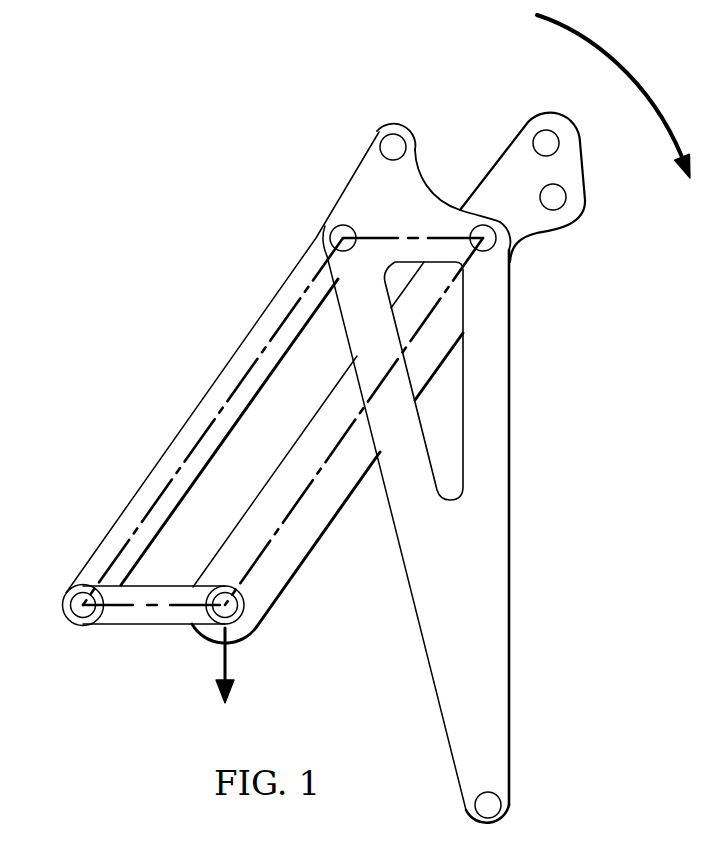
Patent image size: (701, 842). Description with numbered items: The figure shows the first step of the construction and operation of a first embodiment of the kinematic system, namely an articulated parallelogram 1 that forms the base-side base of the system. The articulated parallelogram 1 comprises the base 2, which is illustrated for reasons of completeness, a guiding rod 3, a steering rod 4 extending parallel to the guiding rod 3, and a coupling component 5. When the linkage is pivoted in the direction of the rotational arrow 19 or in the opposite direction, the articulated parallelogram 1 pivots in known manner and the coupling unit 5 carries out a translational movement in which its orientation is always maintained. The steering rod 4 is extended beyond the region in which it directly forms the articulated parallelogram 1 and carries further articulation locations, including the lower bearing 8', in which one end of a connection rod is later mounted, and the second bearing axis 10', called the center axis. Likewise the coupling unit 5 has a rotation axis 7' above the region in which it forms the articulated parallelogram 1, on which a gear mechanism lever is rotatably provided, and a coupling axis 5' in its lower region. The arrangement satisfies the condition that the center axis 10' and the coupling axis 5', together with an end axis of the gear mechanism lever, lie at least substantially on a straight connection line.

The articulated parallelogram 1 is at (259, 437).
The base 2 is at (147, 627).
The guiding rod 3 is at (197, 408).
The steering rod 4 is at (312, 547).
The coupling component 5 is at (454, 468).
The coupling axis 5' is at (519, 813).
The rotation axis 7' is at (413, 167).
The lower bearing 8' is at (588, 188).
The second bearing axis 10' is at (559, 107).
The rotational arrow 19 is at (633, 63).